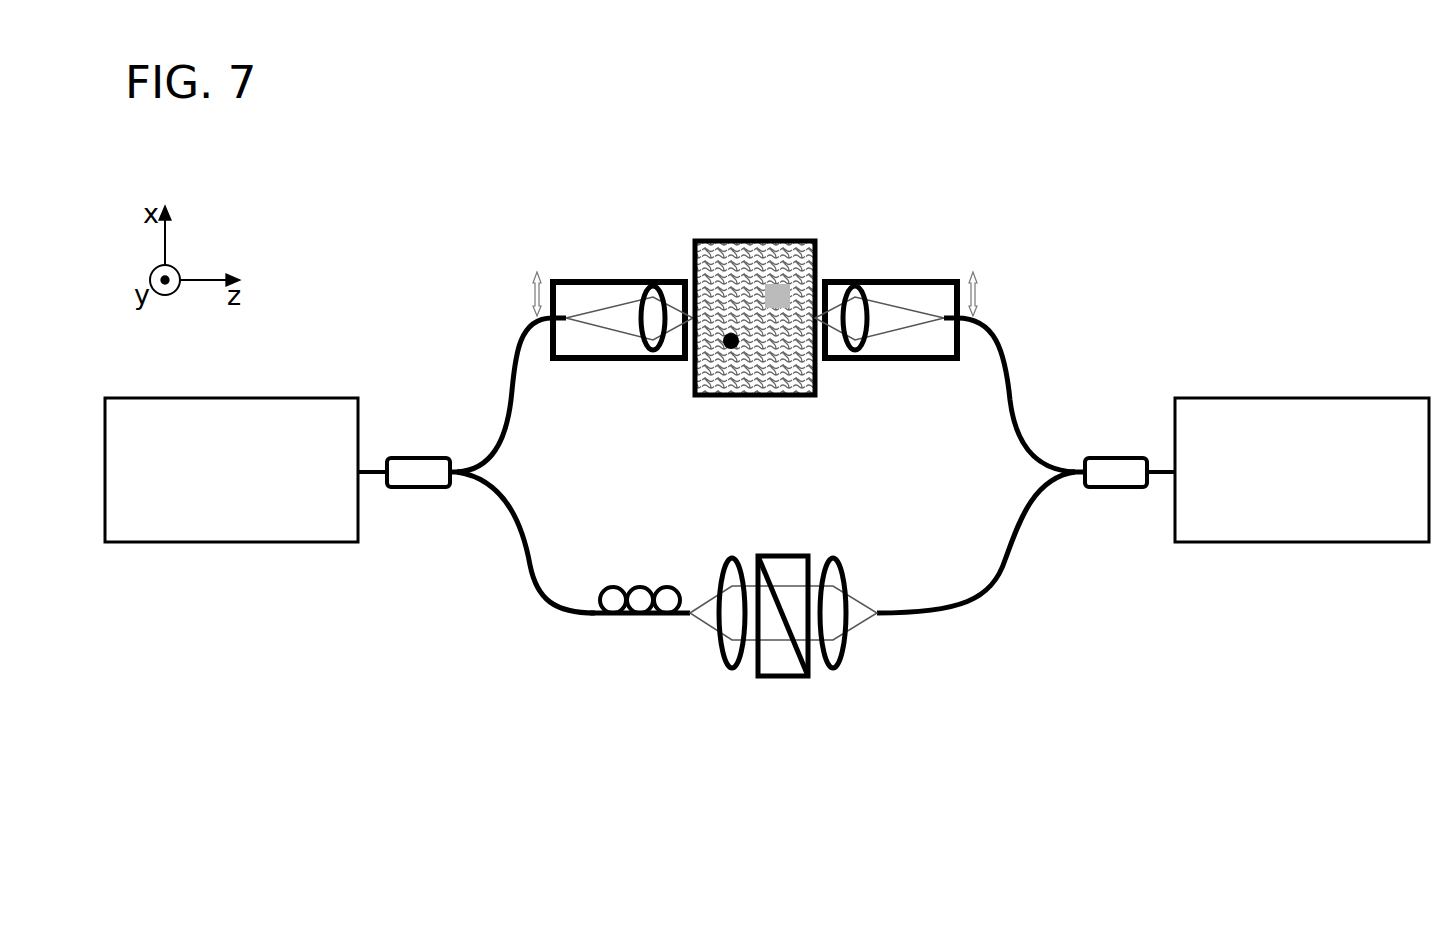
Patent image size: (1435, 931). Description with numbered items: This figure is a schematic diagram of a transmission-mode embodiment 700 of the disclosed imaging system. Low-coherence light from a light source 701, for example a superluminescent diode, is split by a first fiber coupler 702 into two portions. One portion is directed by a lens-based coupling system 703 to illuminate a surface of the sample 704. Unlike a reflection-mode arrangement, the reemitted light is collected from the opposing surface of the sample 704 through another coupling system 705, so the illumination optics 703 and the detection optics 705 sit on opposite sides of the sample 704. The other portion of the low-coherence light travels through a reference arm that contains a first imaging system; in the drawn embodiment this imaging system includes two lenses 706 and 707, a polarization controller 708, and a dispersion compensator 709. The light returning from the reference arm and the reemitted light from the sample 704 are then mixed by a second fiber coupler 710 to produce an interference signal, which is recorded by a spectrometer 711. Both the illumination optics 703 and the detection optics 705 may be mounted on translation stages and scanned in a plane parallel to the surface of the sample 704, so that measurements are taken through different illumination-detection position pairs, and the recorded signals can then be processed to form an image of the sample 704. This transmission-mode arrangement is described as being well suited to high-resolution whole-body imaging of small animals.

The transmission-mode embodiment 700 is at (497, 180).
The light source 701 is at (265, 542).
The first fiber coupler 702 is at (410, 490).
The lens-based coupling system 703 is at (652, 285).
The sample 704 is at (760, 397).
The coupling system 705 is at (856, 287).
The lens 706 is at (732, 558).
The lens 707 is at (837, 558).
The polarization controller 708 is at (630, 620).
The dispersion compensator 709 is at (785, 677).
The second fiber coupler 710 is at (1115, 490).
The spectrometer 711 is at (1337, 542).